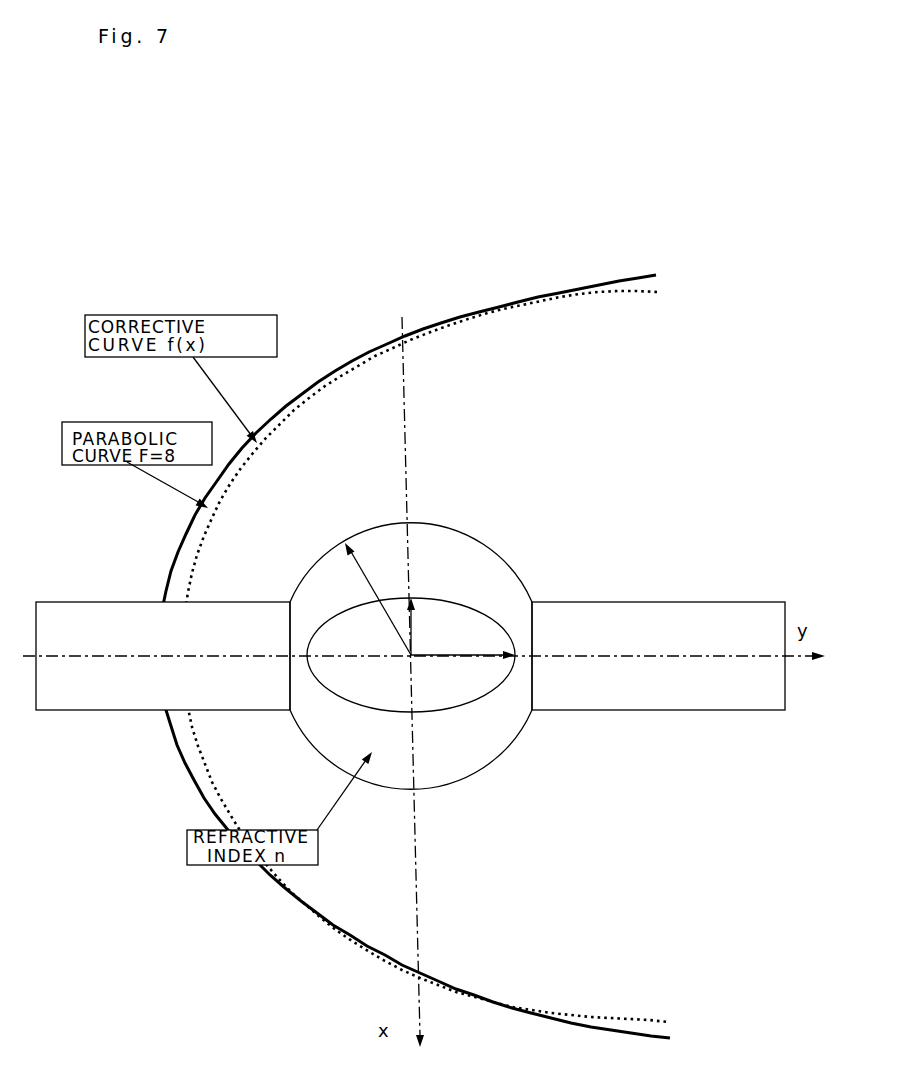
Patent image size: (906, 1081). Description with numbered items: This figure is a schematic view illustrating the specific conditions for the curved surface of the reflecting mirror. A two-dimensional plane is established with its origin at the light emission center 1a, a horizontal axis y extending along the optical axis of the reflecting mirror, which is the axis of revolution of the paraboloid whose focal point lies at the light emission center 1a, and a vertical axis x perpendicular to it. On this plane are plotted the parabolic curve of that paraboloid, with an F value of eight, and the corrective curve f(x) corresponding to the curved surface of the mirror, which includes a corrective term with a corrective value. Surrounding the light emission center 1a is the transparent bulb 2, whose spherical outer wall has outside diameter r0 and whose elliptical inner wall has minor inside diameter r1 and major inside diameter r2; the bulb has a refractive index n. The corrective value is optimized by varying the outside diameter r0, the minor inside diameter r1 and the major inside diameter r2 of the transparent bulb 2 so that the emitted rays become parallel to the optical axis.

The transparent bulb 2 is at (500, 758).
The light emission center 1a is at (419, 668).
The outside diameter of transparent bulb r0 is at (378, 599).
The minor inside diameter of transparent bulb r1 is at (423, 626).
The major inside diameter of transparent bulb r2 is at (463, 670).